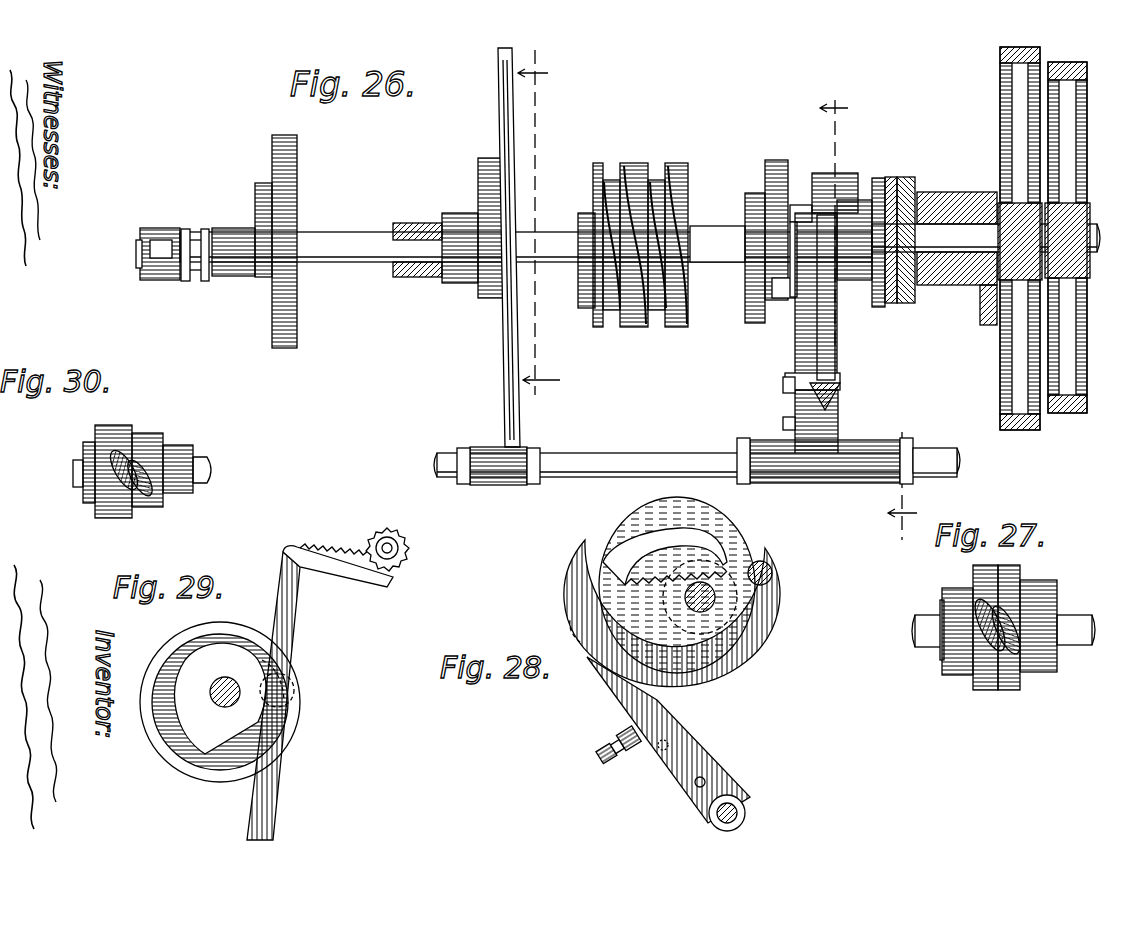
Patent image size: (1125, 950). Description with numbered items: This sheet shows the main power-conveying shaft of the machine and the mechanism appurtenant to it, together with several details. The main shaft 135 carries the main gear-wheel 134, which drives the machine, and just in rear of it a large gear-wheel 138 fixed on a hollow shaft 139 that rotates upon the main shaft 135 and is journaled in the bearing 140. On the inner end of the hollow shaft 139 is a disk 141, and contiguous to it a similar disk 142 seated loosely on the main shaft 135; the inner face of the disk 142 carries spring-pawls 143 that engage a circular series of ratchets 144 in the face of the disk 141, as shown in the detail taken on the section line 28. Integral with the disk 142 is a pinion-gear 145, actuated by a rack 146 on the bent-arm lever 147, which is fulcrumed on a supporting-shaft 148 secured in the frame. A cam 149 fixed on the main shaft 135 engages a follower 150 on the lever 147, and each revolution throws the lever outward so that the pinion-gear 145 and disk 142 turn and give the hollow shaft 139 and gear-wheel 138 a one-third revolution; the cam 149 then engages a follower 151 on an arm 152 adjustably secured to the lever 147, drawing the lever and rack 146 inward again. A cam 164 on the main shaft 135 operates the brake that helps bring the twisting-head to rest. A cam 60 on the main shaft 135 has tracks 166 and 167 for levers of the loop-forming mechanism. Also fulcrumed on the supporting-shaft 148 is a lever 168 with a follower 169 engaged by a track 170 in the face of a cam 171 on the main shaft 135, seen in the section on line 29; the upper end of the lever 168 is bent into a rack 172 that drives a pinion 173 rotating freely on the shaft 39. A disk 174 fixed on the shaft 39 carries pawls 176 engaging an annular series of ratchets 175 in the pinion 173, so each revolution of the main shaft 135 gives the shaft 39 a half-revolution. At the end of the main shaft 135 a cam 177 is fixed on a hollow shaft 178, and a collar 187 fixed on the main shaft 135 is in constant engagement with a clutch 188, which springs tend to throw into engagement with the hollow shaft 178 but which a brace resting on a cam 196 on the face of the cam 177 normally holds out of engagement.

In FIG. 26, the rock-shaft 28 is at (868, 324).
In FIG. 26, the section line 29 is at (539, 237).
In FIG. 30, the shaft 39 is at (206, 463).
In FIG. 29, the shaft 39 is at (387, 528).
In FIG. 26, the cam 60 is at (614, 322).
In FIG. 26, the main gear-wheel 134 is at (1086, 379).
In FIG. 26, the main shaft 135 is at (372, 220).
In FIG. 29, the main shaft 135 is at (224, 678).
In FIG. 28, the main shaft 135 is at (686, 600).
In FIG. 27, the main shaft 135 is at (1072, 645).
In FIG. 26, the large gear-wheel 138 is at (1004, 390).
In FIG. 26, the hollow shaft 139 is at (964, 192).
In FIG. 26, the bearing 140 is at (966, 286).
In FIG. 27, the bearing 140 is at (1038, 672).
In FIG. 26, the disk 141 is at (904, 303).
In FIG. 27, the disk 141 is at (1008, 690).
In FIG. 26, the disk 142 is at (890, 177).
In FIG. 27, the disk 142 is at (984, 690).
In FIG. 27, the spring-pawls 143 is at (984, 602).
In FIG. 27, the ratchets 144 is at (1012, 617).
In FIG. 26, the pinion-gear 145 is at (878, 302).
In FIG. 28, the pinion-gear 145 is at (756, 617).
In FIG. 27, the pinion-gear 145 is at (956, 676).
In FIG. 26, the rack 146 is at (850, 200).
In FIG. 28, the rack 146 is at (630, 548).
In FIG. 26, the bent-arm lever 147 is at (830, 334).
In FIG. 28, the bent-arm lever 147 is at (620, 688).
In FIG. 26, the supporting-shaft 148 is at (664, 453).
In FIG. 28, the supporting-shaft 148 is at (743, 810).
In FIG. 26, the cam 149 is at (772, 166).
In FIG. 28, the cam 149 is at (742, 534).
In FIG. 26, the follower 150 is at (780, 298).
In FIG. 28, the follower 150 is at (570, 632).
In FIG. 26, the follower 151 is at (796, 205).
In FIG. 28, the follower 151 is at (772, 566).
In FIG. 26, the arm 152 is at (834, 173).
In FIG. 28, the arm 152 is at (762, 664).
In FIG. 26, the cam 164 is at (752, 312).
In FIG. 26, the track 166 is at (658, 178).
In FIG. 26, the track 167 is at (608, 178).
In FIG. 26, the lever 168 is at (506, 332).
In FIG. 29, the lever 168 is at (290, 634).
In FIG. 29, the follower 169 is at (293, 680).
In FIG. 29, the track 170 is at (228, 642).
In FIG. 26, the cam 171 is at (484, 178).
In FIG. 29, the cam 171 is at (172, 764).
In FIG. 29, the rack 172 is at (342, 559).
In FIG. 30, the pinion 173 is at (122, 415).
In FIG. 29, the pinion 173 is at (408, 549).
In FIG. 30, the disk 174 is at (151, 433).
In FIG. 30, the ratchets 175 is at (116, 470).
In FIG. 30, the pawls 176 is at (168, 495).
In FIG. 26, the cam 177 is at (297, 312).
In FIG. 26, the hollow shaft 178 is at (248, 276).
In FIG. 26, the collar 187 is at (159, 228).
In FIG. 26, the clutch 188 is at (195, 229).
In FIG. 26, the cam 196 is at (262, 183).